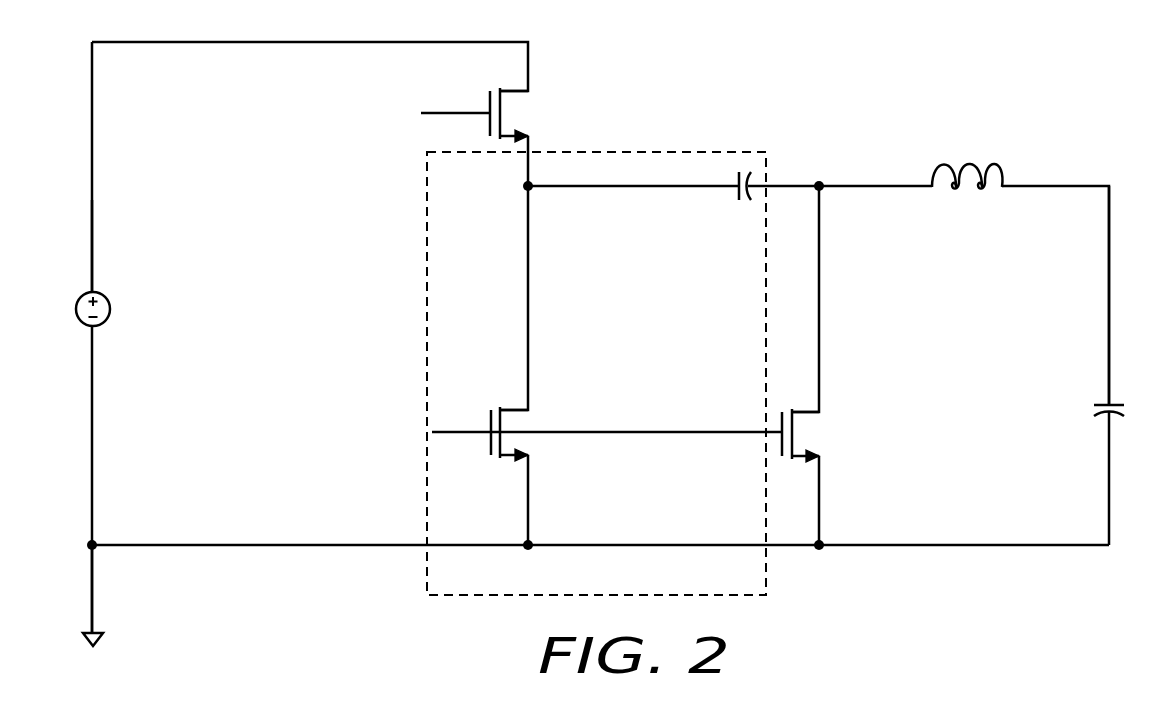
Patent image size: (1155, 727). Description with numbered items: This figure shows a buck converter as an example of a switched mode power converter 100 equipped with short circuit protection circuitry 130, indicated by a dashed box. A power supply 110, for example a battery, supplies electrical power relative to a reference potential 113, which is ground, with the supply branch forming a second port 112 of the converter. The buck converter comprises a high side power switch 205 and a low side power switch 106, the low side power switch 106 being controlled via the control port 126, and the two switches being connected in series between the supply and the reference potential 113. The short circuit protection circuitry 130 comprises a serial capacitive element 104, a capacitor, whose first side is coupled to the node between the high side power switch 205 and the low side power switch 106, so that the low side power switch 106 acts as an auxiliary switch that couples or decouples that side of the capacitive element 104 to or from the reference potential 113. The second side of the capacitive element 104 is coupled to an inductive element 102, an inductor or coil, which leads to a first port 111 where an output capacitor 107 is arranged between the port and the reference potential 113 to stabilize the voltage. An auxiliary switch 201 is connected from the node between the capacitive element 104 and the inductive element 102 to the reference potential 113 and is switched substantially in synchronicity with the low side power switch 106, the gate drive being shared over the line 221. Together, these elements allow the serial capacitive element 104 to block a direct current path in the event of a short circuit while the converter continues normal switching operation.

The power converter 100 is at (362, 600).
The inductive element 102 is at (967, 160).
The capacitive element 104 is at (743, 205).
The low side power switch 106 is at (522, 425).
The output capacitor 107 is at (1090, 412).
The power supply 110 is at (110, 310).
The first port 111 is at (1108, 303).
The second port 112 is at (93, 258).
The reference potential 113 is at (104, 628).
The control port 126 is at (452, 435).
The short circuit protection circuitry 130 is at (768, 562).
The auxiliary switch 201 is at (805, 430).
The high side power switch 205 is at (535, 108).
The gate wire 221 is at (725, 435).